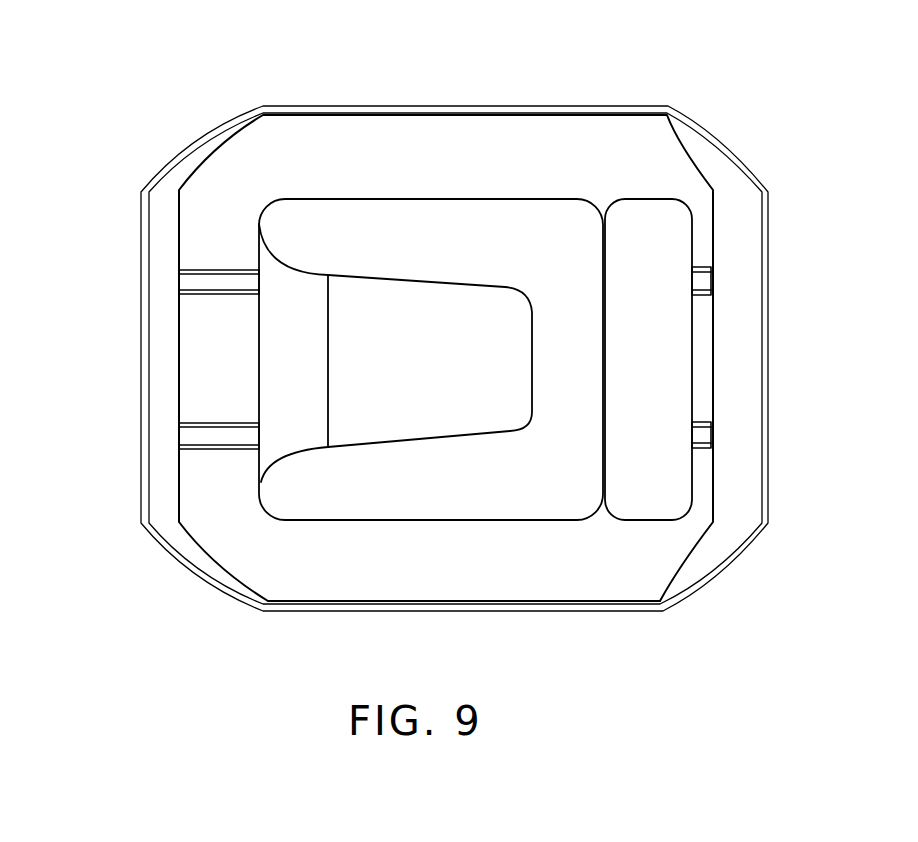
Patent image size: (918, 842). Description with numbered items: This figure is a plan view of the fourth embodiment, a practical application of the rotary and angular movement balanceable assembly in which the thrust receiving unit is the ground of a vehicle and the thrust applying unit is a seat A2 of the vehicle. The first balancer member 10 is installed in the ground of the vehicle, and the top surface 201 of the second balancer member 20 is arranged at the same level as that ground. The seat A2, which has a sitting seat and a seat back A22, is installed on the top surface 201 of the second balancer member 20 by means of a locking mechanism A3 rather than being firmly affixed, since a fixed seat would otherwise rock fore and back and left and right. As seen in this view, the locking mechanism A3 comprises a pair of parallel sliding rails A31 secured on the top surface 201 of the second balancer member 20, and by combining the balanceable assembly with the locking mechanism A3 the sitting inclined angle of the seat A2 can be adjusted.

The first balancer member 10 is at (765, 497).
The second balancer member 20 is at (526, 571).
The top surface 201 is at (602, 555).
The seat A2 is at (378, 227).
The seat back A22 is at (662, 247).
The locking mechanism A3 is at (231, 250).
The sliding rails A31 is at (198, 282).